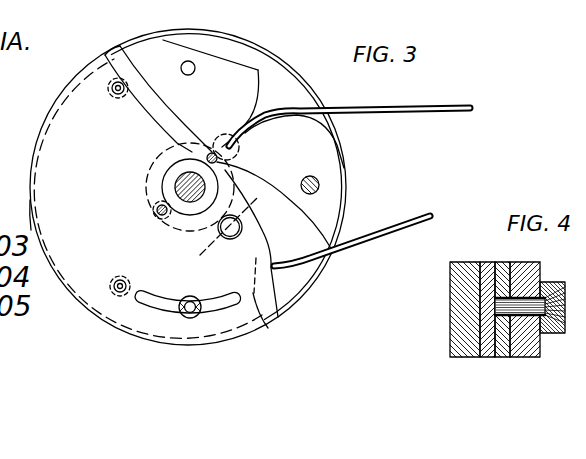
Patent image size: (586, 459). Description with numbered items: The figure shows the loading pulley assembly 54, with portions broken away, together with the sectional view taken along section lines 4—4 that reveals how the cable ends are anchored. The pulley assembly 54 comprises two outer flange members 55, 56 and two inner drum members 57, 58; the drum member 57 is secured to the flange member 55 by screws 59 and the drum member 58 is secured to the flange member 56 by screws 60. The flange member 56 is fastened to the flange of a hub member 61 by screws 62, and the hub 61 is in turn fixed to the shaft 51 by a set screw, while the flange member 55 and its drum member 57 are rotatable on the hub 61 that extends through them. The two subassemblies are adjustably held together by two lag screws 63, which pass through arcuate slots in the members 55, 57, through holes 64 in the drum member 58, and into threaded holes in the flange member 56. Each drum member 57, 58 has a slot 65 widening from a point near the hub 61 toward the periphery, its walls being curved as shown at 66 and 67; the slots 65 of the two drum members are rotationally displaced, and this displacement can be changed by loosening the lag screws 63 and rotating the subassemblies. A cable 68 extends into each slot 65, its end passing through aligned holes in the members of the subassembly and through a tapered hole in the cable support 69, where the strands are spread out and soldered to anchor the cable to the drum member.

In FIG. 3, the section lines 4— 4 is at (256, 197).
In FIG. 3, the shaft 51 is at (177, 185).
In FIG. 3, the pulley assembly 54 is at (148, 211).
In FIG. 3, the outer flange member 55 is at (32, 214).
In FIG. 4, the outer flange member 55 is at (528, 357).
In FIG. 3, the outer flange member 56 is at (286, 32).
In FIG. 4, the outer flange member 56 is at (450, 297).
In FIG. 3, the inner drum member 57 is at (123, 63).
In FIG. 4, the inner drum member 57 is at (501, 357).
In FIG. 3, the inner drum member 58 is at (156, 50).
In FIG. 4, the inner drum member 58 is at (490, 357).
In FIG. 3, the screws 59 is at (110, 96).
In FIG. 3, the screws 60 is at (314, 172).
In FIG. 3, the hub member 61 is at (147, 163).
In FIG. 3, the screws 62 is at (213, 152).
In FIG. 3, the lag screws 63 is at (193, 296).
In FIG. 3, the holes 64 is at (190, 75).
In FIG. 3, the slot 65 is at (262, 105).
In FIG. 3, the curved slot wall 66 is at (264, 103).
In FIG. 3, the curved slot wall 67 is at (338, 130).
In FIG. 3, the cable 68 is at (414, 106).
In FIG. 4, the cable 68 is at (510, 297).
In FIG. 3, the cable support 69 is at (232, 233).
In FIG. 4, the cable support 69 is at (548, 284).